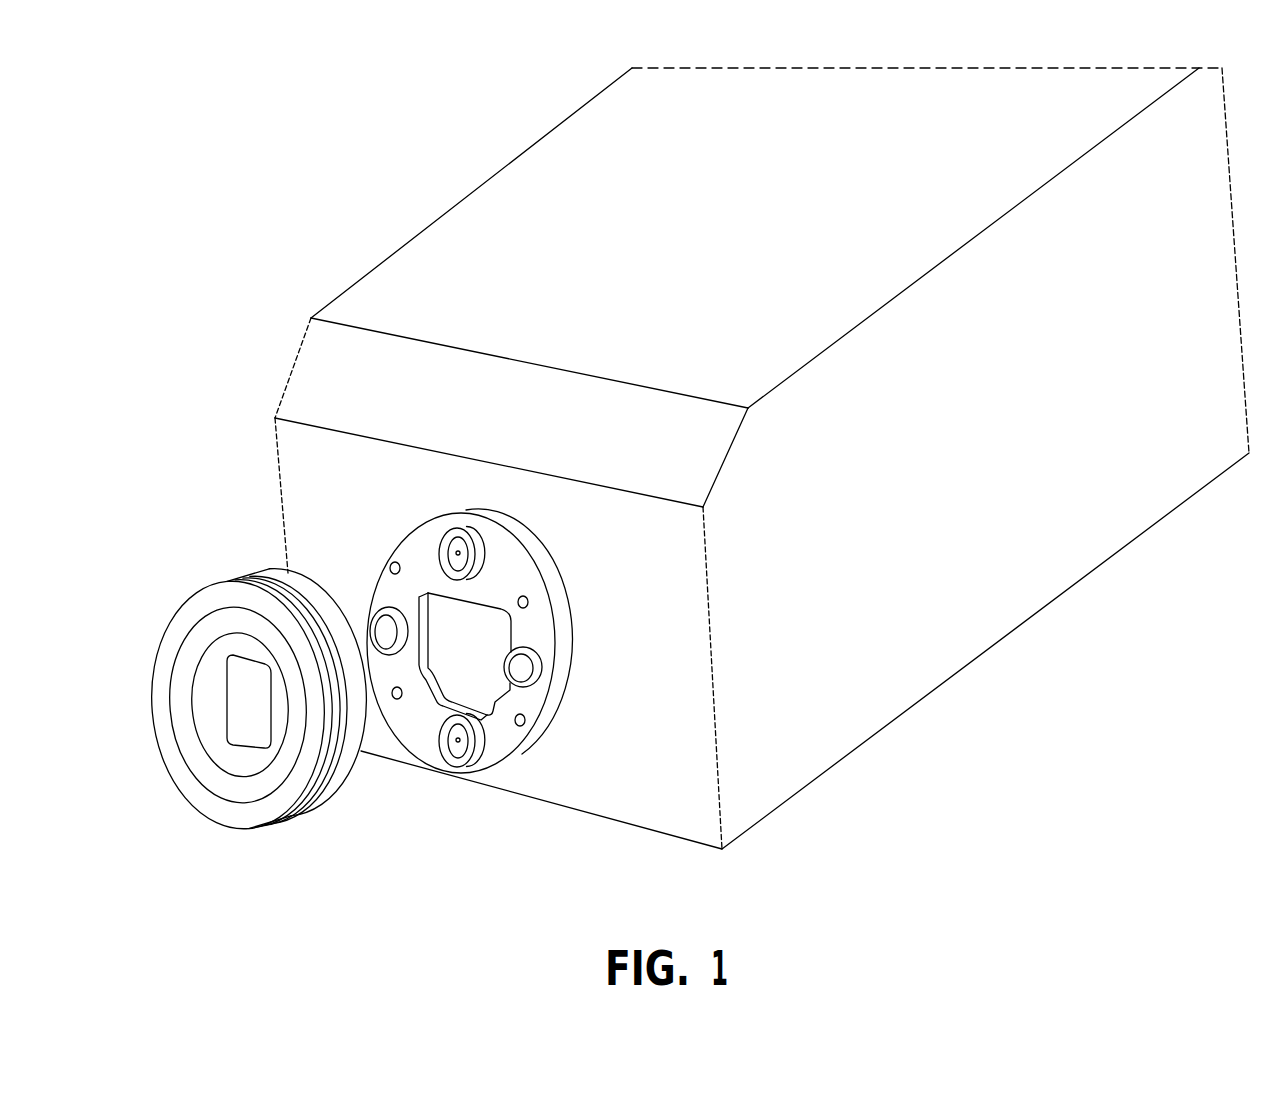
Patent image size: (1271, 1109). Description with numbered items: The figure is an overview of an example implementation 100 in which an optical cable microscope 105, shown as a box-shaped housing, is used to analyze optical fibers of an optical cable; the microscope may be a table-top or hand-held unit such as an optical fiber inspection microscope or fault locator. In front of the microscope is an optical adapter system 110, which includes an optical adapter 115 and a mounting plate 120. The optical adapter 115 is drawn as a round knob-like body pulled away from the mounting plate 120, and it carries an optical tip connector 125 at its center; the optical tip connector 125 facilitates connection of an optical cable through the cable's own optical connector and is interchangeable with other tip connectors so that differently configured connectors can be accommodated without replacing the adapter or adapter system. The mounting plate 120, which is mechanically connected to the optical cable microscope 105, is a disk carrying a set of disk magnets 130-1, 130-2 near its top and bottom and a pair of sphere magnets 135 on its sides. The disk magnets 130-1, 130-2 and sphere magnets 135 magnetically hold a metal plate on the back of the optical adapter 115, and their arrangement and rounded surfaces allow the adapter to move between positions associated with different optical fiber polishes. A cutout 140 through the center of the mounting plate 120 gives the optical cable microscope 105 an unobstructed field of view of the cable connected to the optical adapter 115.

The example implementation 100 is at (156, 100).
The optical cable microscope 105 is at (664, 458).
The optical adapter system 110 is at (418, 392).
The optical adapter 115 is at (155, 743).
The mounting plate 120 is at (397, 549).
The optical tip connector 125 is at (230, 694).
The disk magnet 130-1 is at (425, 524).
The disk magnet 130-2 is at (470, 788).
The sphere magnets 135 is at (534, 637).
The cutout 140 is at (492, 669).